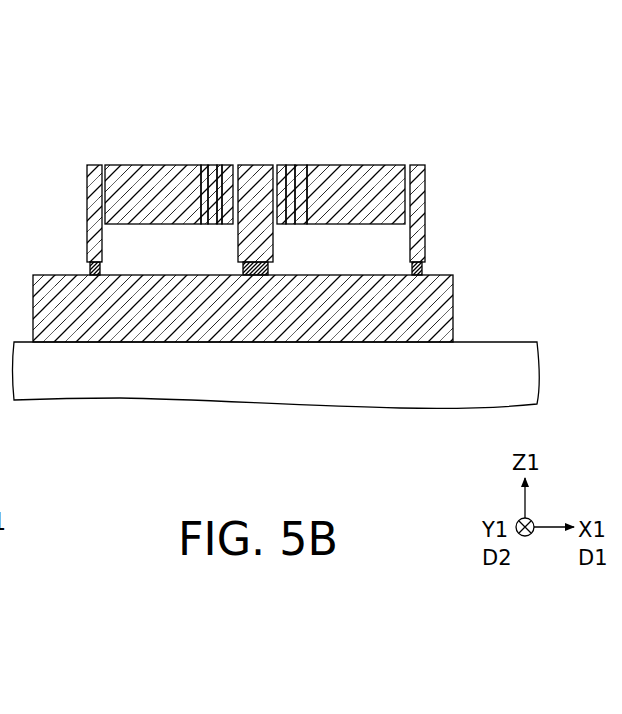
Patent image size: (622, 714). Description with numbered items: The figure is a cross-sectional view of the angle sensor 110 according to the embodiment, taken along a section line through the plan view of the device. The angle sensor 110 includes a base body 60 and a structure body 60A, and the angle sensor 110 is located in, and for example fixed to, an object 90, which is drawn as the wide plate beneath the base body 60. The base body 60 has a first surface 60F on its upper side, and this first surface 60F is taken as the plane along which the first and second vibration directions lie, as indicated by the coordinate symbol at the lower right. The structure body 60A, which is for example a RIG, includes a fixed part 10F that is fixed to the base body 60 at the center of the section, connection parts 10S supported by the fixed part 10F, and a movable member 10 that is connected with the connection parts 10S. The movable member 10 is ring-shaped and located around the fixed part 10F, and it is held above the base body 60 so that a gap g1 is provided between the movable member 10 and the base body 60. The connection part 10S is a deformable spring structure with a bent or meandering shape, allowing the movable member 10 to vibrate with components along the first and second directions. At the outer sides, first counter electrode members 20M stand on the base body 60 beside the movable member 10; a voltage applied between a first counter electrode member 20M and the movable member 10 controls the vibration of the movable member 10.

The movable member 10 is at (349, 191).
The fixed part 10F is at (253, 200).
The connection part 10S is at (284, 170).
The first counter electrode member 20M is at (97, 165).
The base body 60 is at (216, 326).
The structure body 60A is at (381, 103).
The first surface 60F is at (437, 260).
The object 90 is at (500, 370).
The angle sensor 110 is at (430, 111).
The gap g1 is at (290, 253).